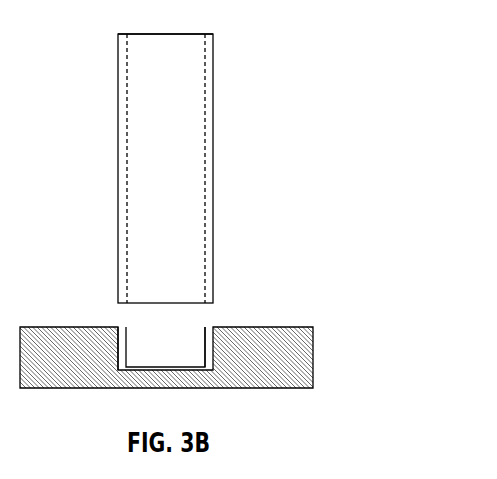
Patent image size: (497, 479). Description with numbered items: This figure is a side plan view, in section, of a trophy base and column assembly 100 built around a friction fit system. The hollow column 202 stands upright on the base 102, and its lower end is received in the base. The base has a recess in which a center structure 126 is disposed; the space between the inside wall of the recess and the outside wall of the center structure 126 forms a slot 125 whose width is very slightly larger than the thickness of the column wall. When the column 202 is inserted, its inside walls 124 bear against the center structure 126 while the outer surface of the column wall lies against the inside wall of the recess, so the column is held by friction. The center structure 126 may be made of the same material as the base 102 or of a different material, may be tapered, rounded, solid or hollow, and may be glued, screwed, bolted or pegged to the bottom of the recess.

The base and column assembly 100 is at (281, 236).
The base 102 is at (73, 391).
The inside walls of hollow column 124 is at (118, 35).
The slot 125 is at (119, 326).
The center structure 126 is at (205, 326).
The tube 202 is at (118, 135).